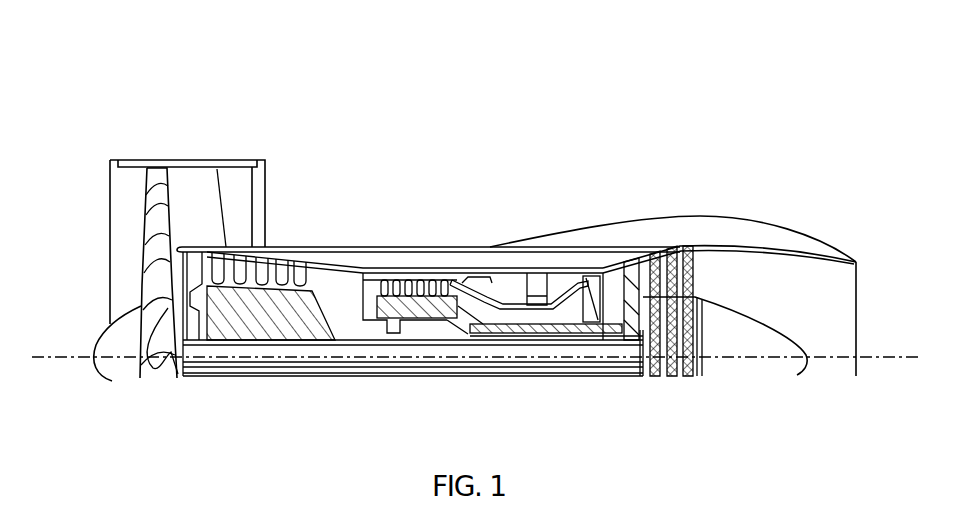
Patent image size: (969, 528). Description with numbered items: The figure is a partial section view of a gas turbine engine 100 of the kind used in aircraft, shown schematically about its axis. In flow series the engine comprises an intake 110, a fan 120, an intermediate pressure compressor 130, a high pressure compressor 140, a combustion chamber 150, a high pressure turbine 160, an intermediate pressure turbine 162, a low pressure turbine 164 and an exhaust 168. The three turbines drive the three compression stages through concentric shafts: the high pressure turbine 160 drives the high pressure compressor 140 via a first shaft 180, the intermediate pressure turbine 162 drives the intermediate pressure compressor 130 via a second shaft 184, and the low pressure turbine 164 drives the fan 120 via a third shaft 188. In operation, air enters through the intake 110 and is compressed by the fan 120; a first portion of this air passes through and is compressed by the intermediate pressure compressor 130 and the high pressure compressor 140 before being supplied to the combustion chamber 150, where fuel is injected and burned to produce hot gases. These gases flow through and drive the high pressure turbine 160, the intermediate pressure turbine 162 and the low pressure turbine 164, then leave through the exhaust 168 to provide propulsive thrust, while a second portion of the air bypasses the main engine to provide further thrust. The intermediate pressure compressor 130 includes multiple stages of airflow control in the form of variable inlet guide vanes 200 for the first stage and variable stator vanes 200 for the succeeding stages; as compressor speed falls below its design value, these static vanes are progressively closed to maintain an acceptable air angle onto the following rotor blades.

The gas turbine engine 100 is at (499, 86).
The intake 110 is at (125, 222).
The fan 120 is at (165, 183).
The intermediate pressure compressor 130 is at (296, 300).
The high pressure compressor 140 is at (417, 285).
The combustion chamber 150 is at (513, 290).
The high pressure turbine 160 is at (603, 272).
The intermediate pressure turbine 162 is at (627, 262).
The low pressure turbine 164 is at (673, 250).
The exhaust 168 is at (845, 318).
The first shaft 180 is at (537, 297).
The second shaft 184 is at (567, 300).
The third shaft 188 is at (593, 352).
The variable inlet guide vanes and variable stator vanes 200 is at (298, 266).